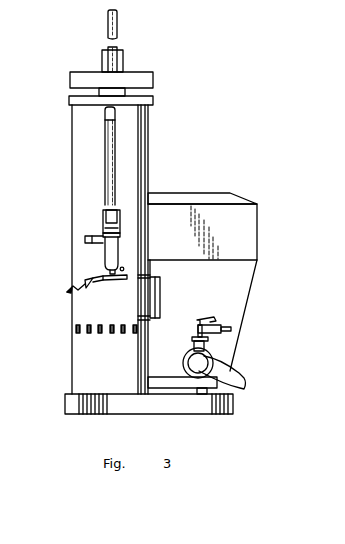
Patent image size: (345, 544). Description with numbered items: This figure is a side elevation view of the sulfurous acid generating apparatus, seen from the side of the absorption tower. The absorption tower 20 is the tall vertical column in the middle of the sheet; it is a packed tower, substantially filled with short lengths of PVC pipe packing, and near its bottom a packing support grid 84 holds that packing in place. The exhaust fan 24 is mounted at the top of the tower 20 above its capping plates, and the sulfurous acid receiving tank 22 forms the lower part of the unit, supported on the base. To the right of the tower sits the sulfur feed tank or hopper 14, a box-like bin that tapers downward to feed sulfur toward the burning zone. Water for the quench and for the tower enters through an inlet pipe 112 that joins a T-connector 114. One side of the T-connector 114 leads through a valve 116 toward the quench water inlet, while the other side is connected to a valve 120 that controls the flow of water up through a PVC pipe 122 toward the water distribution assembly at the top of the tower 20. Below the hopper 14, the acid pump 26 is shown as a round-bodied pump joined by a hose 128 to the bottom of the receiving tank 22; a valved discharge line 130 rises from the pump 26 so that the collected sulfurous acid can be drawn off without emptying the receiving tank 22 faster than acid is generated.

The sulfur feed tank or hopper 14 is at (258, 228).
The absorption tower 20 is at (152, 118).
The sulfurous acid receiving tank 22 is at (72, 368).
The exhaust fan 24 is at (153, 78).
The acid pump 26 is at (214, 359).
The packing support grid 84 is at (83, 323).
The inlet pipe 112 is at (102, 238).
The T-connector 114 is at (118, 240).
The valve 116 is at (83, 282).
The valve 120 is at (104, 221).
The PVC pipe 122 is at (118, 163).
The hose 128 is at (243, 380).
The valved discharge line 130 is at (213, 321).